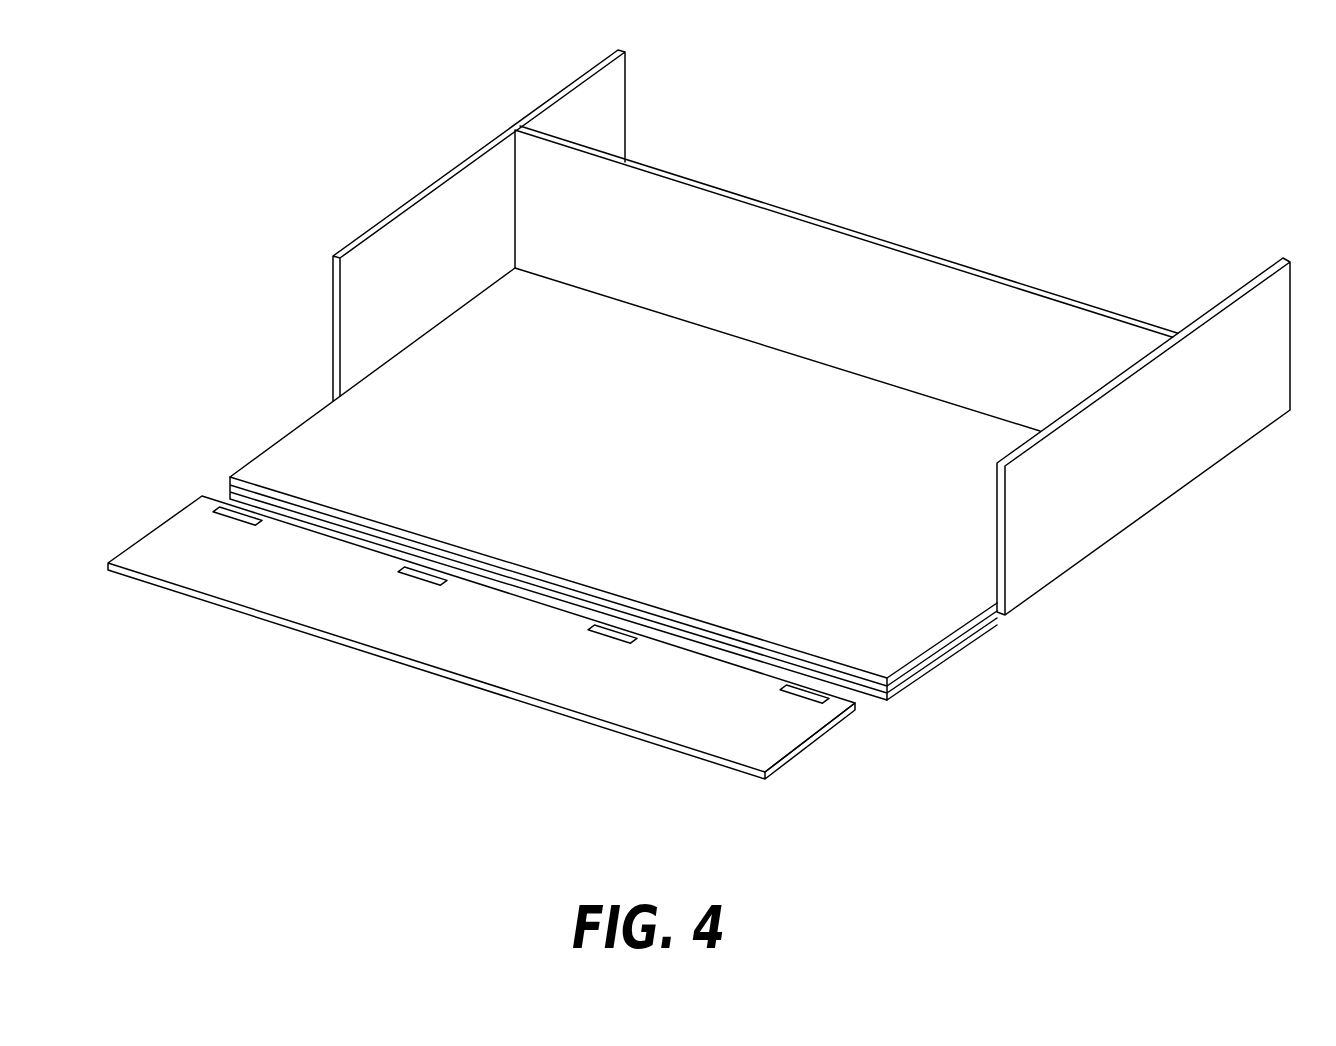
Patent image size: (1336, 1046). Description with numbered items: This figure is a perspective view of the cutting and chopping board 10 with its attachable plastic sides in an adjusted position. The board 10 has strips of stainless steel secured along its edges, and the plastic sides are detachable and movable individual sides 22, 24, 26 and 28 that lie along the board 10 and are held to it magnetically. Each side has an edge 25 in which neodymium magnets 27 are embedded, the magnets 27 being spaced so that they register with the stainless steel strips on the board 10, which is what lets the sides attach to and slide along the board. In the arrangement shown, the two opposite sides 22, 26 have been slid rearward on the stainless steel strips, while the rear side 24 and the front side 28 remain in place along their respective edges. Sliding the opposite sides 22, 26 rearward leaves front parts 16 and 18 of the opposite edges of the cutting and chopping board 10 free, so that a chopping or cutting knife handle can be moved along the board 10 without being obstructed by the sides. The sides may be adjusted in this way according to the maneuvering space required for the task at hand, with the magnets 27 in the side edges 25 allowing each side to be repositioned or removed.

The cutting and chopping board 10 is at (699, 418).
The front part of the board edge 16 is at (292, 457).
The front part of the board edge 18 is at (917, 640).
The side 22 is at (428, 217).
The side 24 is at (853, 273).
The edge of the side 25 is at (348, 552).
The side 26 is at (1155, 442).
The neodymium magnet 27 is at (623, 640).
The side 28 is at (782, 737).